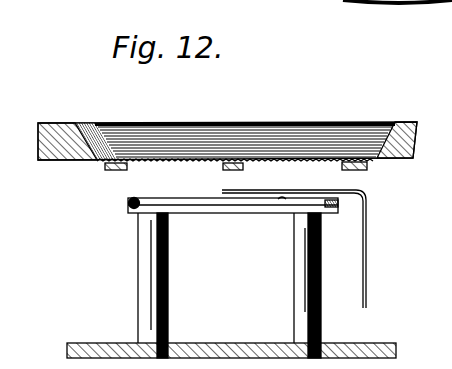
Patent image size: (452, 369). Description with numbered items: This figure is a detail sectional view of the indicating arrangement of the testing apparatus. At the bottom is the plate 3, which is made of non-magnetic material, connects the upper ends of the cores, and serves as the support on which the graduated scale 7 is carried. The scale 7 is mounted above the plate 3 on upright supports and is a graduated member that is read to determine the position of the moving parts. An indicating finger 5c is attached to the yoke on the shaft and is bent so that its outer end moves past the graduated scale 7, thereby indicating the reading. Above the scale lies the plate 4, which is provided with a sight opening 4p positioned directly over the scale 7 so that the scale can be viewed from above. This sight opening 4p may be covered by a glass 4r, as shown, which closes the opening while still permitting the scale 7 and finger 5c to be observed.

The plate 4 is at (62, 123).
The sight opening 4p is at (245, 118).
The glass 4r is at (143, 168).
The indicating finger 5c is at (369, 215).
The graduated scale 7 is at (238, 209).
The plate 3 is at (90, 343).